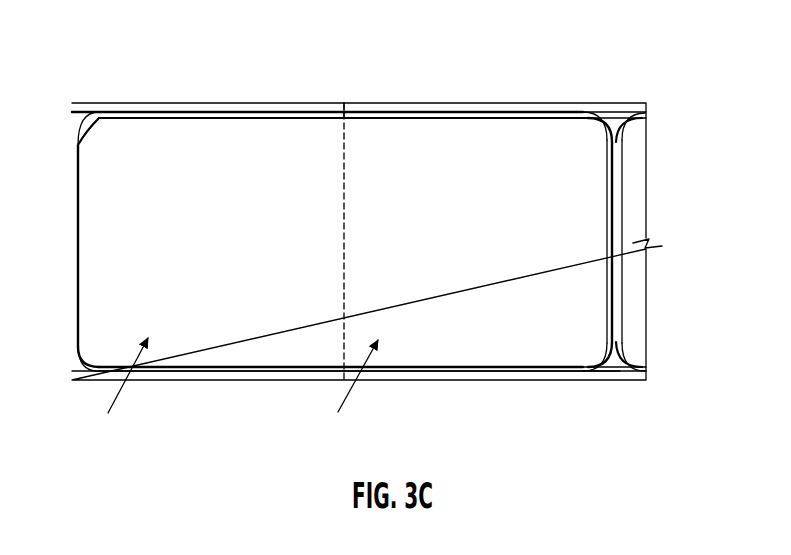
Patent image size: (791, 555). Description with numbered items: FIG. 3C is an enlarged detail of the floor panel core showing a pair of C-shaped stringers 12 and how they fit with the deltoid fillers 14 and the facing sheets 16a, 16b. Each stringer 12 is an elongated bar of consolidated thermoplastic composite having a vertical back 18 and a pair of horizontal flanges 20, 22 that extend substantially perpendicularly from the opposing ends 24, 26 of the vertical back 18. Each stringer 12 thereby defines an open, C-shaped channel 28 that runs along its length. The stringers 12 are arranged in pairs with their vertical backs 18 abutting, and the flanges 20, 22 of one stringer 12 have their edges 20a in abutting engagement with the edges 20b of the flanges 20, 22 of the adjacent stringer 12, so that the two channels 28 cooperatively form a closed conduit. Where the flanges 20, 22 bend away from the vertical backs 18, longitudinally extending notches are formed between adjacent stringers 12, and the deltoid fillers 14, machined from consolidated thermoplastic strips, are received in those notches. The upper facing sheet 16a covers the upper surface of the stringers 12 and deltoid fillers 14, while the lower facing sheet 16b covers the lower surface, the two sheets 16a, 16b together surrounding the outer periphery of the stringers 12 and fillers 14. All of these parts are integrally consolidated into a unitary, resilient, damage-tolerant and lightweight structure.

The C-shaped stringer 12 is at (178, 112).
The deltoid filler 14 is at (619, 111).
The upper facing sheet 16a is at (543, 105).
The lower facing sheet 16b is at (555, 379).
The vertical back 18 is at (79, 234).
The horizontal flange 20 is at (267, 112).
The flange edge 20a is at (334, 118).
The flange edge 20b is at (362, 113).
The horizontal flange 22 is at (207, 363).
The end of vertical back 24 is at (98, 121).
The end of vertical back 26 is at (80, 338).
The C-shaped channel 28 is at (229, 390).